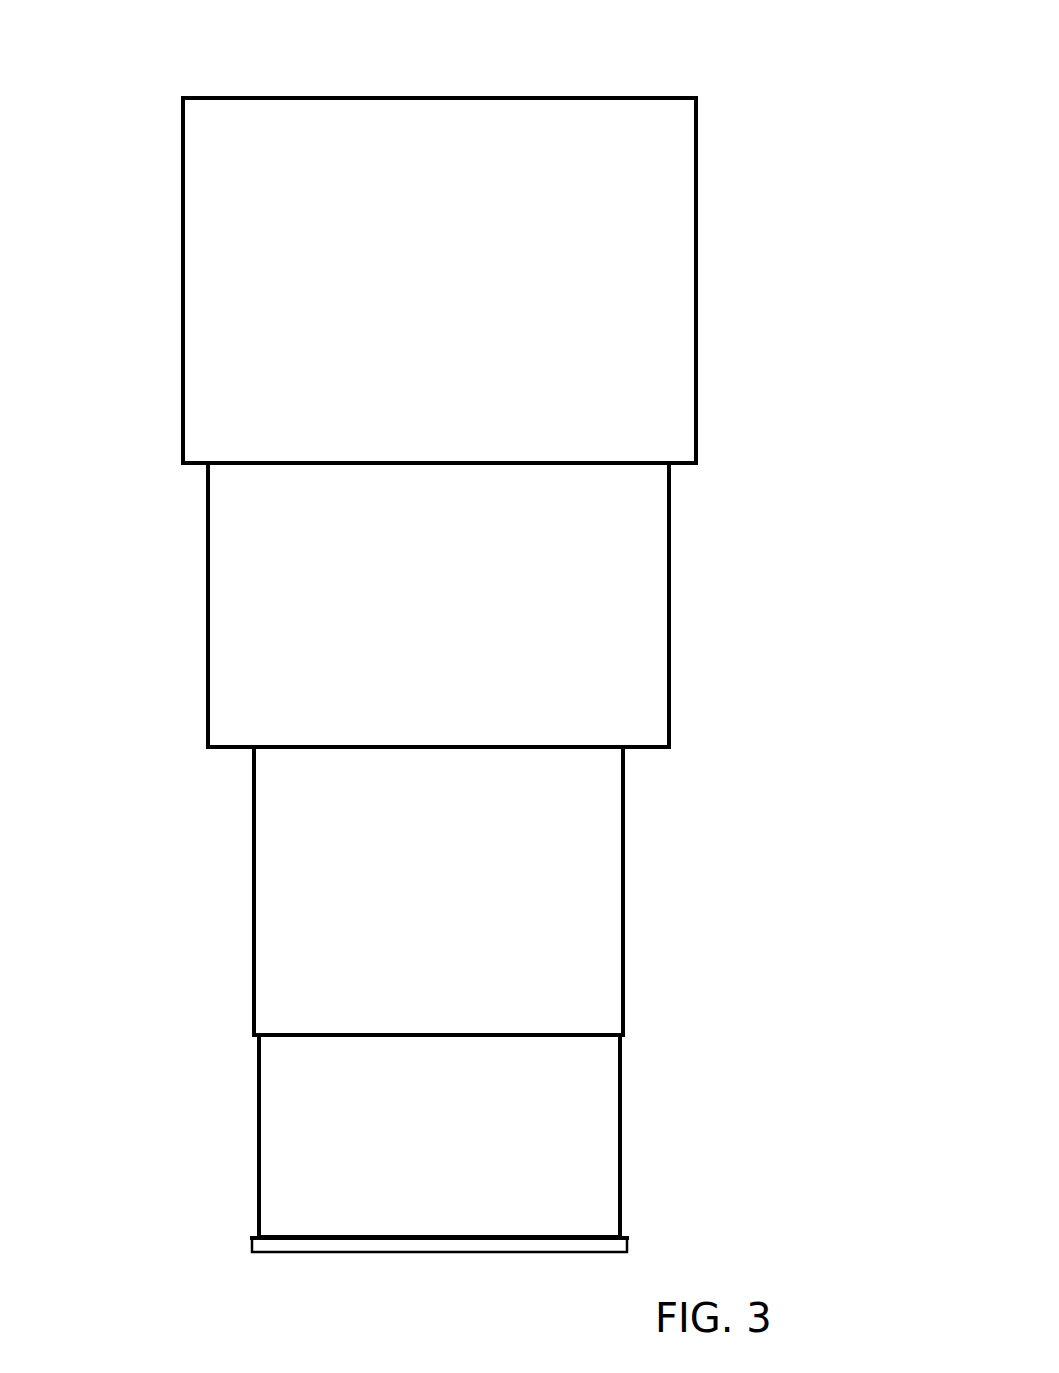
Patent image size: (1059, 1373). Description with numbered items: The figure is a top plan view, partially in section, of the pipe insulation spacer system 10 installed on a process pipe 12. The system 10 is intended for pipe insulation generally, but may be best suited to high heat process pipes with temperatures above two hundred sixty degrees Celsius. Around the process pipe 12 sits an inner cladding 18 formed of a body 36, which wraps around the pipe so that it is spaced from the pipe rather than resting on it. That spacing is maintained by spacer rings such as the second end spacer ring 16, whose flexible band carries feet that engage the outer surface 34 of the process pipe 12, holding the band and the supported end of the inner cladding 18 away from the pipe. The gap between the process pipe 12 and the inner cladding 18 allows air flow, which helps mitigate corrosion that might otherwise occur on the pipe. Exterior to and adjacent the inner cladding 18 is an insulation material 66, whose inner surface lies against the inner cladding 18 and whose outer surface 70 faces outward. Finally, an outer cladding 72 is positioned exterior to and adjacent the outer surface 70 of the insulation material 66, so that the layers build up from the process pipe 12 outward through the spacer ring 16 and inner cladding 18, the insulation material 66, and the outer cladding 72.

The pipe insulation spacer system 10 is at (784, 65).
The process pipe 12 is at (259, 1200).
The second end spacer ring 16 is at (415, 1243).
The inner cladding 18 is at (253, 830).
The outer surface 34 is at (577, 1113).
The body 36 is at (588, 847).
The insulation material 66 is at (296, 678).
The outer surface 70 is at (670, 507).
The outer cladding 72 is at (182, 330).